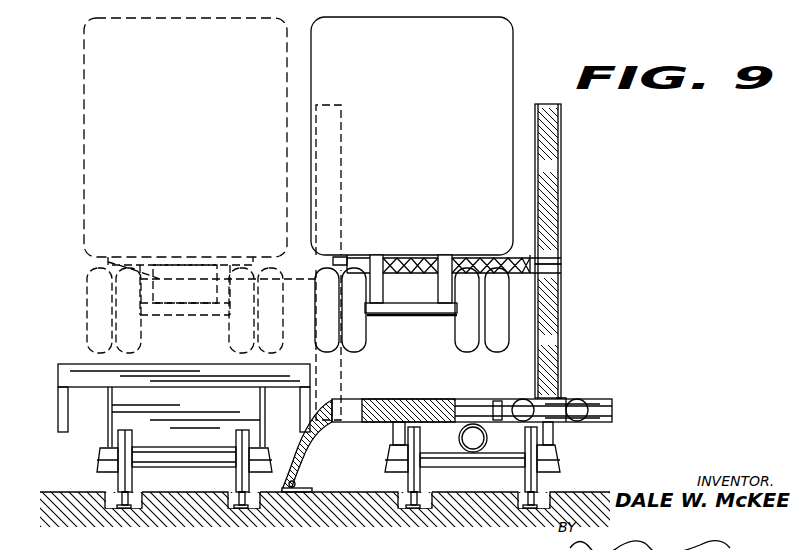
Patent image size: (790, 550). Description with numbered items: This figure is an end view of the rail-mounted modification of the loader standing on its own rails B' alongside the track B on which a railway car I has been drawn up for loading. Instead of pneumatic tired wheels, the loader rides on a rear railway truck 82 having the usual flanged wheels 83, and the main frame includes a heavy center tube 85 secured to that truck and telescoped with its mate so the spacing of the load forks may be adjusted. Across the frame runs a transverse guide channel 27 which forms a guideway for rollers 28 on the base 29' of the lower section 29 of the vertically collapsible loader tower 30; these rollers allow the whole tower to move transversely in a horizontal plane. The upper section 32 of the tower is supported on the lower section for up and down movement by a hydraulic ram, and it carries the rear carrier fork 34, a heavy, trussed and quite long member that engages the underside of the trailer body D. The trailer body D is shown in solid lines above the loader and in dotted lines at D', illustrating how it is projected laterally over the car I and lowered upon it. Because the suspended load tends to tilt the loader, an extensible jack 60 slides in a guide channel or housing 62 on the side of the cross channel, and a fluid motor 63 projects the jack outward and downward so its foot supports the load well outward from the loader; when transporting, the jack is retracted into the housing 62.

The guide channel 27 is at (595, 400).
The rollers 28 is at (586, 424).
The lower section of loader tower 29 is at (566, 331).
The base of mast 29' is at (583, 391).
The vertically collapsible loader tower 30 is at (577, 251).
The upper section of loader tower 32 is at (553, 185).
The rear carrier fork 34 is at (428, 262).
The extensible jack 60 is at (318, 446).
The guide channel or housing 62 is at (392, 420).
The fluid motor 63 is at (520, 382).
The rear railway truck 82 is at (554, 440).
The flanged wheels 83 is at (388, 470).
The center tube 85 is at (458, 438).
The trailer body D is at (431, 218).
The trailer body in projected position D' is at (178, 185).
The railway car I is at (74, 360).
The track B is at (162, 469).
The rails B' is at (472, 465).